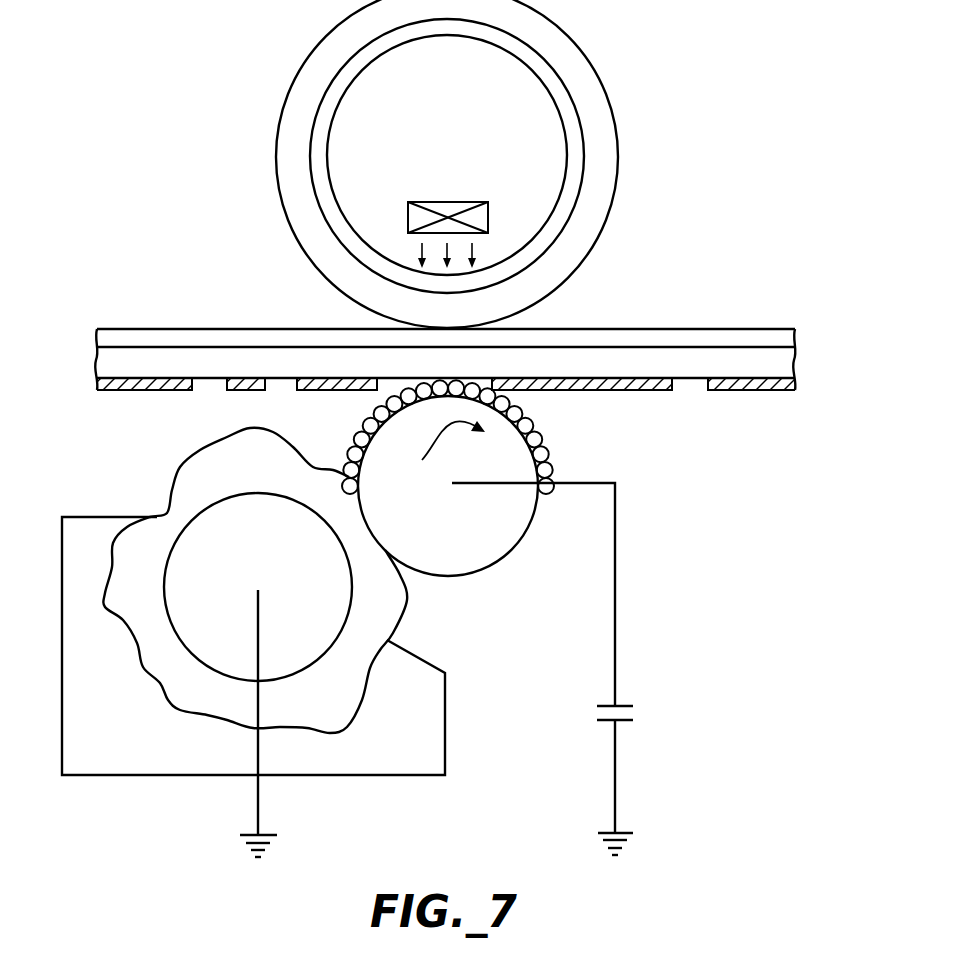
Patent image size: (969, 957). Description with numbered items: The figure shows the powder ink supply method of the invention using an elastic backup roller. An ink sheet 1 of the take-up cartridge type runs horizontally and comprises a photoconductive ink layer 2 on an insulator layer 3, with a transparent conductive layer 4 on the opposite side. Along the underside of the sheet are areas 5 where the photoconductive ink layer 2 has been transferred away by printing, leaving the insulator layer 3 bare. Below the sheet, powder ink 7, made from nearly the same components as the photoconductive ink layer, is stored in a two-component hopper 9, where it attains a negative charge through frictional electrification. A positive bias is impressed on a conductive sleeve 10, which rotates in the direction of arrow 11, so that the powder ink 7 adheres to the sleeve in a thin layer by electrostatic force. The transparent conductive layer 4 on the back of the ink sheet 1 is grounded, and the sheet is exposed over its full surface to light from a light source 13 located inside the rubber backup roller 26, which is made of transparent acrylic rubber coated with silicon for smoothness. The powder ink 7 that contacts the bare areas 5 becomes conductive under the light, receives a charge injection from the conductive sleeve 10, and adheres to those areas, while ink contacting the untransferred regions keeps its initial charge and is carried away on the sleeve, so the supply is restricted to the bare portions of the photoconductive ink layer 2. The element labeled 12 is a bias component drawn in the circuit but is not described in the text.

The ink sheet 1 is at (668, 326).
The photoconductive ink layer 2 is at (795, 383).
The insulator layer 3 is at (795, 364).
The transparent conductive layer 4 is at (795, 337).
The areas where ink has been transferred 5 is at (207, 381).
The powder ink 7 is at (540, 449).
The two-component hopper 9 is at (160, 757).
The conductive sleeve 10 is at (481, 528).
The arrow 11 is at (437, 448).
The capacitor / bias source 12 is at (624, 721).
The light source 13 is at (437, 201).
The rubber backup roller 26 is at (567, 48).